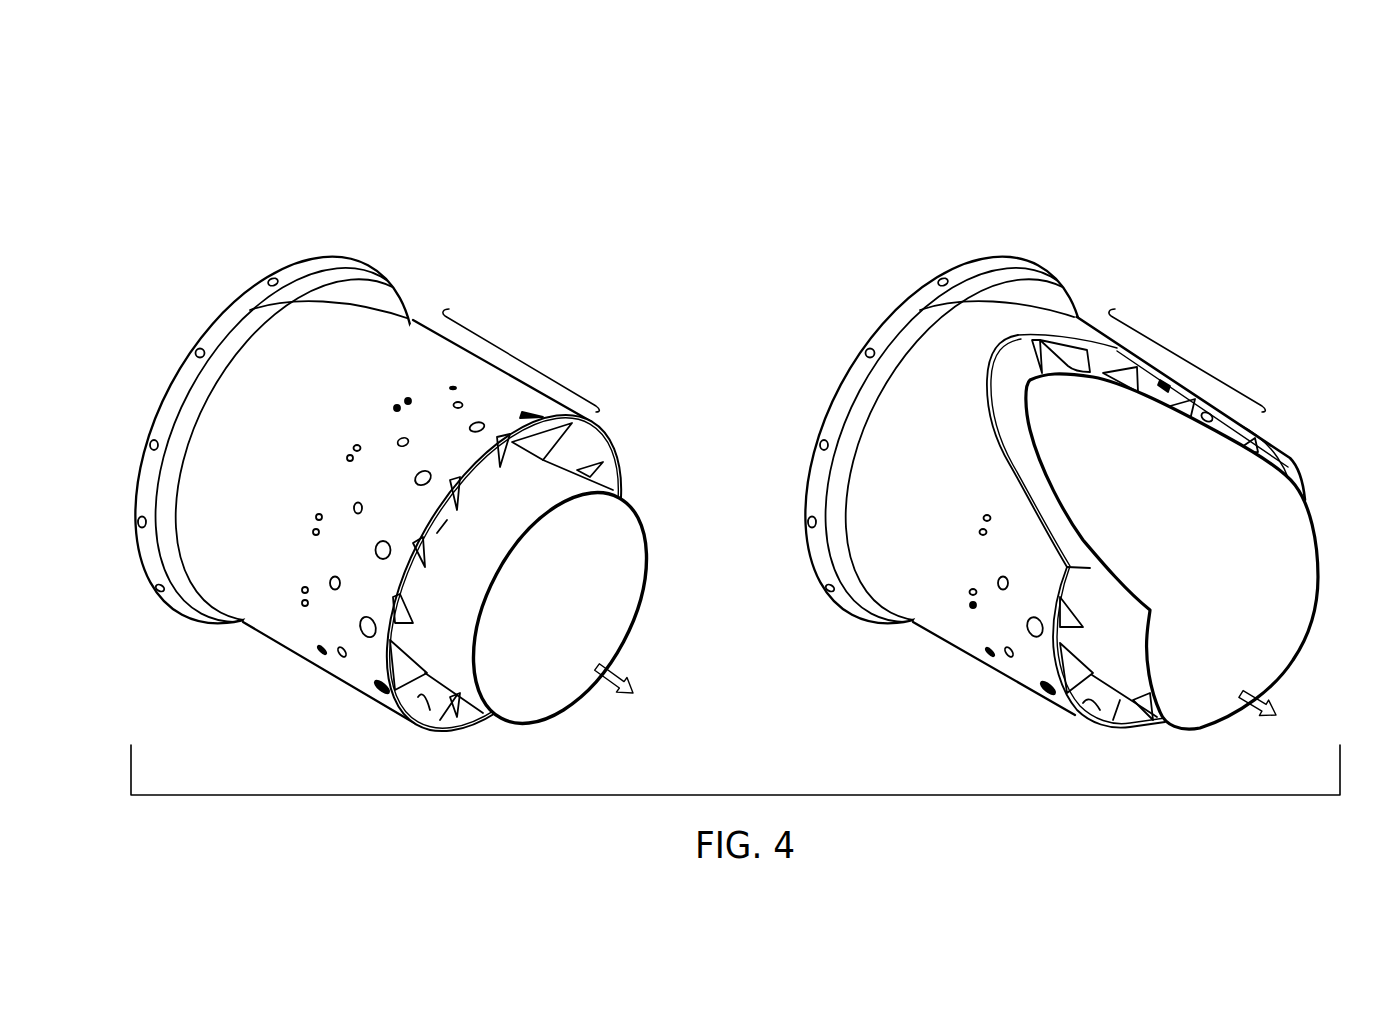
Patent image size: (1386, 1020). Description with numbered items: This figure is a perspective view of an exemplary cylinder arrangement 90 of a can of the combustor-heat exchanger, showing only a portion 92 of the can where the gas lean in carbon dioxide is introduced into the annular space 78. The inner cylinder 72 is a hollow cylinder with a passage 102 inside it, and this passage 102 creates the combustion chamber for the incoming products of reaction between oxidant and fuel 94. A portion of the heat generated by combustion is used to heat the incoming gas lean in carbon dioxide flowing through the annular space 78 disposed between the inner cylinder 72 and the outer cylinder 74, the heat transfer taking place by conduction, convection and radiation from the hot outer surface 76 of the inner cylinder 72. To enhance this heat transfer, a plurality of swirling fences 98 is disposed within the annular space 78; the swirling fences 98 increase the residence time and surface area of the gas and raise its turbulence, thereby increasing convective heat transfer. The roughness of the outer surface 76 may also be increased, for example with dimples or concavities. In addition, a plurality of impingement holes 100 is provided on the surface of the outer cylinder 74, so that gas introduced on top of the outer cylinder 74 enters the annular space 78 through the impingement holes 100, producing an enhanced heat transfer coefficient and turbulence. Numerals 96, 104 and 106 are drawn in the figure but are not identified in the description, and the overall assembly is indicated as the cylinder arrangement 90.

The inner cylinder 72 is at (650, 518).
The outer cylinder 74 is at (388, 665).
The outer surface of the inner cylinder 76 is at (560, 496).
The annular space 78 is at (595, 450).
The cylinder arrangement 90 is at (1156, 128).
The portion of the can 92 is at (522, 355).
The incoming products of reaction between oxidant and fuel 94 is at (623, 670).
The tube body 96 is at (263, 622).
The swirling fences 98 is at (412, 708).
The impingement holes 100 is at (470, 426).
The passage 102 is at (628, 557).
The slot 104 is at (437, 533).
The mounting flange 106 is at (308, 265).